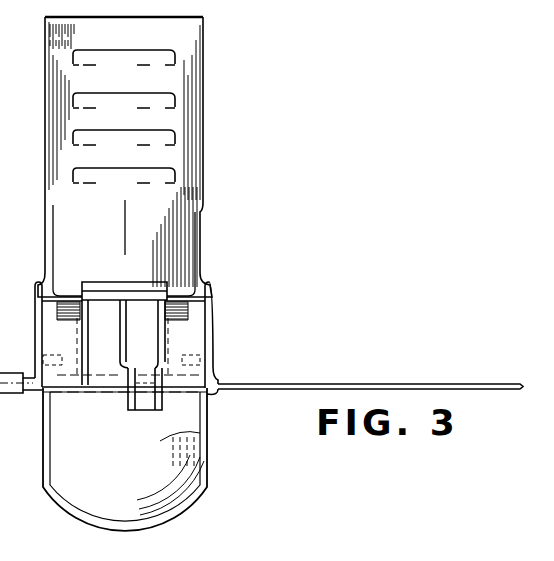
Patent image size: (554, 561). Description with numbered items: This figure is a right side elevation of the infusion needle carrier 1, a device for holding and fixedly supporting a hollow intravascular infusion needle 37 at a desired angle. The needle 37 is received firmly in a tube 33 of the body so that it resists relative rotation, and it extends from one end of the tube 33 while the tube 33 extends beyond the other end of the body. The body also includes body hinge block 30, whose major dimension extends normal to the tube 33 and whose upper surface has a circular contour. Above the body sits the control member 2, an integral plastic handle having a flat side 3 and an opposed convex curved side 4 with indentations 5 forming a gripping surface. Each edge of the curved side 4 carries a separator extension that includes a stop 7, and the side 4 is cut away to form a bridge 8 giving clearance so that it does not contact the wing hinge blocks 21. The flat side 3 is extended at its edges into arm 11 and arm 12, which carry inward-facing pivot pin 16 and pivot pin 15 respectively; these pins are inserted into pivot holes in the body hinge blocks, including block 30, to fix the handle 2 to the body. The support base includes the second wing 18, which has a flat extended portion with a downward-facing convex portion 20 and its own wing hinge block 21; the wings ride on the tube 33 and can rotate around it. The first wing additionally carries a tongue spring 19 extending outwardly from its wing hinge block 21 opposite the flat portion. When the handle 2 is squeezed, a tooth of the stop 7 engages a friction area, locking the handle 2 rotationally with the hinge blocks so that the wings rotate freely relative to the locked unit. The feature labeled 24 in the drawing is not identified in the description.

The infusion needle carrier 1 is at (222, 163).
The control member 2 is at (190, 13).
The flat side 3 is at (50, 257).
The convex curved side 4 is at (176, 120).
The indentations 5 is at (163, 102).
The stop 7 is at (130, 208).
The bridge 8 is at (120, 282).
The arm 11 is at (213, 318).
The arm 12 is at (57, 344).
The pivot pin 15 is at (41, 362).
The pivot pin 16 is at (214, 362).
The second wing 18 is at (203, 440).
The tongue spring 19 is at (162, 398).
The downward-facing convex portion 20 is at (168, 470).
The wing hinge block 21 is at (102, 310).
The center line 24 is at (140, 234).
The body hinge block 30 is at (190, 338).
The tube 33 is at (33, 390).
The hollow intravascular infusion needle 37 is at (333, 383).